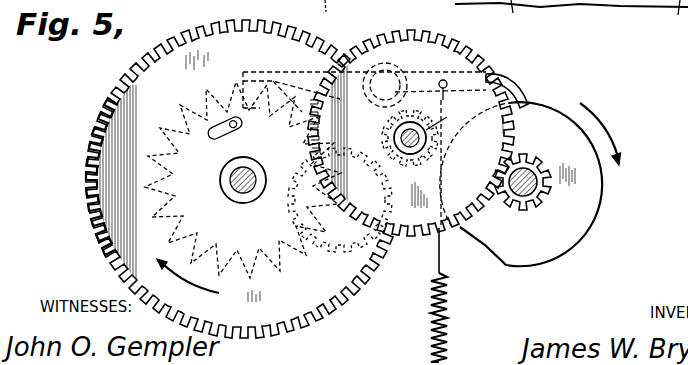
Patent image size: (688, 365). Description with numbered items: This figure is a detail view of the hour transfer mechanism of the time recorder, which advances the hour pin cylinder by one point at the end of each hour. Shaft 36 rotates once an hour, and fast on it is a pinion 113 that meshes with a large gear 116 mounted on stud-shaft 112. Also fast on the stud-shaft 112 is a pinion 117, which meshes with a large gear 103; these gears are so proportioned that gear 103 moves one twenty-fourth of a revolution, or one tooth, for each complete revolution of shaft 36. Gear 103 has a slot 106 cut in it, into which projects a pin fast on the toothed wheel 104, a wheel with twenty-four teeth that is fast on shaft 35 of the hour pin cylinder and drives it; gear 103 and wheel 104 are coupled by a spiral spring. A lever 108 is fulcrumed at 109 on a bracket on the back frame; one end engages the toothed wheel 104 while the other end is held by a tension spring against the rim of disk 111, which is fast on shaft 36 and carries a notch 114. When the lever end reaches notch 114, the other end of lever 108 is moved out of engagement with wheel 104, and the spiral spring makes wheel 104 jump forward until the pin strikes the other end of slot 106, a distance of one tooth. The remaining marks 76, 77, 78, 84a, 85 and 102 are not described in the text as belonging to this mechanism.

The shaft 35 is at (251, 190).
The shaft 36 is at (539, 196).
The frame part 76 is at (513, 5).
The frame part 77 is at (440, 9).
The frame part 78 is at (307, 11).
The pivot pin 84a is at (422, 7).
The lever part 85 is at (329, 28).
The frame part 102 is at (232, 0).
The large gear 103 is at (136, 97).
The toothed wheel 104 is at (173, 193).
The slot 106 is at (208, 137).
The lever 108 is at (284, 72).
The fulcrum 109 is at (383, 78).
The disk 111 is at (549, 117).
The stud-shaft 112 is at (404, 142).
The pinion 113 is at (432, 283).
The notch 114 is at (485, 250).
The large gear 116 is at (361, 212).
The pinion 117 is at (509, 74).